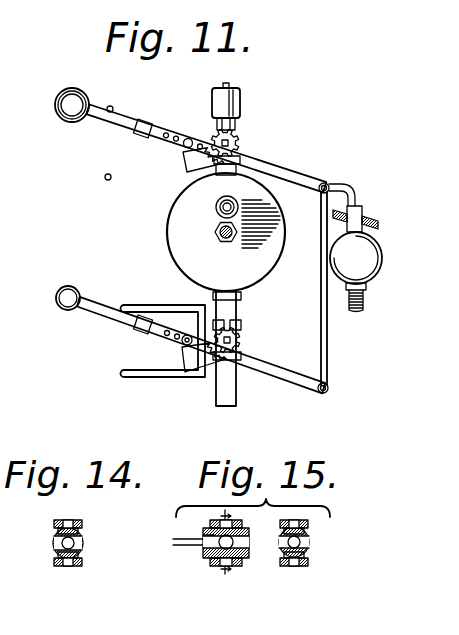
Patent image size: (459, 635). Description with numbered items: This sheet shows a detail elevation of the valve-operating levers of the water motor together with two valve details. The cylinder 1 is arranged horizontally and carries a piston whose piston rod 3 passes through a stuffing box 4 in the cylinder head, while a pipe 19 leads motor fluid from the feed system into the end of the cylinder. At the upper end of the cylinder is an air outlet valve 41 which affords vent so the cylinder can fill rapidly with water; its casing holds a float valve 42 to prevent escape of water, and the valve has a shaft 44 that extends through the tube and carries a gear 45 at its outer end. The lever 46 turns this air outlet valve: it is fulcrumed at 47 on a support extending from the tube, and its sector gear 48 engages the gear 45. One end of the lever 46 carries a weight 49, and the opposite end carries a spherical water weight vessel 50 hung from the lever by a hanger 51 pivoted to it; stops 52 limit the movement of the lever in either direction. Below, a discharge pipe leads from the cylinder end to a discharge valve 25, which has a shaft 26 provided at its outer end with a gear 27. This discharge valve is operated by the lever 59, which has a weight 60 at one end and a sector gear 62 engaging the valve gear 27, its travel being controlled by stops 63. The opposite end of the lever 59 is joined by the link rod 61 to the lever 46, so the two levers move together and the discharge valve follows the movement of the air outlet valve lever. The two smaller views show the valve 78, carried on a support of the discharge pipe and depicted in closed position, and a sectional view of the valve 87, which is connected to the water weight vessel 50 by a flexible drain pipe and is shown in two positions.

In FIG. 11, the cylinder 1 is at (274, 212).
In FIG. 11, the piston rod 3 is at (215, 232).
In FIG. 11, the stuffing box 4 is at (226, 242).
In FIG. 11, the pipe 19 is at (216, 207).
In FIG. 11, the discharge valve 25 is at (240, 330).
In FIG. 11, the shaft 26 is at (238, 350).
In FIG. 11, the gear 27 is at (240, 340).
In FIG. 11, the air outlet valve 41 is at (236, 128).
In FIG. 11, the float valve 42 is at (240, 100).
In FIG. 11, the shaft 44 is at (240, 148).
In FIG. 11, the gear 45 is at (256, 138).
In FIG. 11, the lever 46 is at (118, 129).
In FIG. 11, the fulcrum 47 is at (190, 138).
In FIG. 11, the sector gear 48 is at (186, 168).
In FIG. 11, the weight 49 is at (64, 118).
In FIG. 11, the water weight vessel 50 is at (366, 258).
In FIG. 11, the hanger 51 is at (366, 226).
In FIG. 11, the stop 52 is at (120, 96).
In FIG. 11, the lever 59 is at (265, 371).
In FIG. 11, the weight 60 is at (62, 310).
In FIG. 11, the link rod 61 is at (328, 330).
In FIG. 11, the sector gear 62 is at (198, 365).
In FIG. 11, the stop 63 is at (152, 295).
In FIG. 14, the valve 78 is at (84, 530).
In FIG. 15, the valve 87 is at (280, 554).